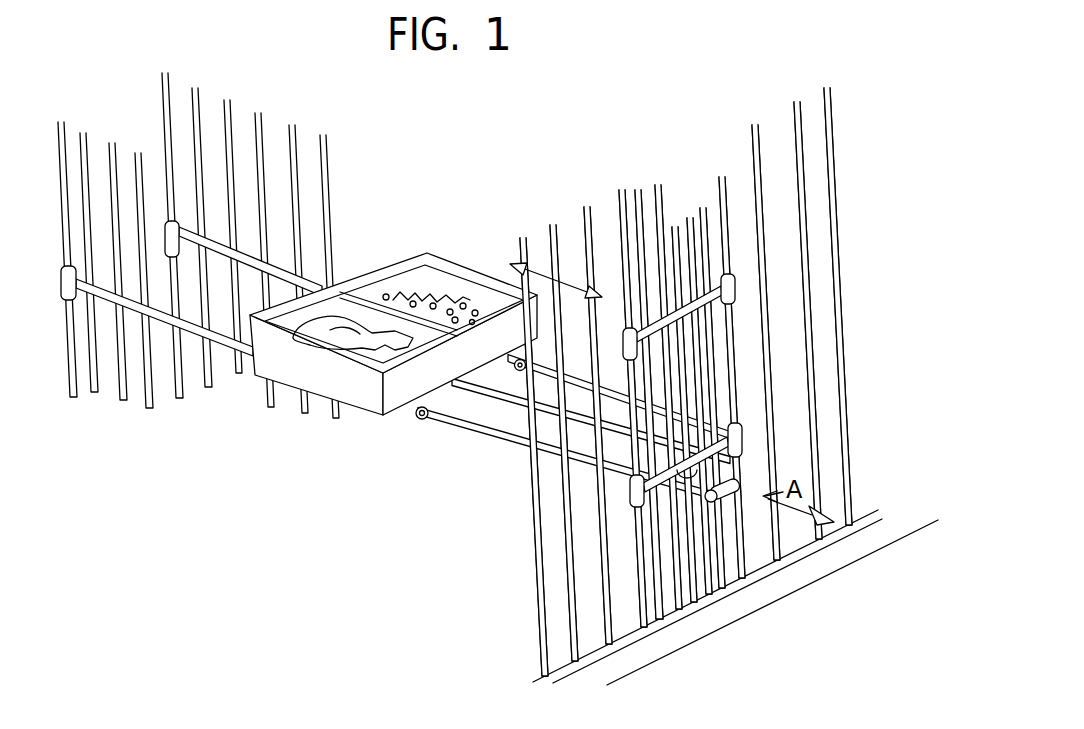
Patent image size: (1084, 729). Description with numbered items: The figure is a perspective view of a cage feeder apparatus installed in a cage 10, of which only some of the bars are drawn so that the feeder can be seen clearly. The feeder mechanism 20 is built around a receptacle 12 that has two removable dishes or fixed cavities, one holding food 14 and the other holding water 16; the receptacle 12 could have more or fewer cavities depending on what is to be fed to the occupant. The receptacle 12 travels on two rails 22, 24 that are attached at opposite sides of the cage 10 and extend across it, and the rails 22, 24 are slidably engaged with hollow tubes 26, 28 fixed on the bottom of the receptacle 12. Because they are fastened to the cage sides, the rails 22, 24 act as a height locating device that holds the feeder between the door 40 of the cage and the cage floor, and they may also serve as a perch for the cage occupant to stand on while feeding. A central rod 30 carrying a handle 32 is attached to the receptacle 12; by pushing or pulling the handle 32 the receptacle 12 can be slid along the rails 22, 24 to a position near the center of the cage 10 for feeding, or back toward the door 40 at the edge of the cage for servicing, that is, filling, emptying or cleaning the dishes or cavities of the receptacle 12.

The cage 10 is at (693, 652).
The receptacle 12 is at (377, 402).
The food 14 is at (362, 343).
The water 16 is at (463, 300).
The feeder mechanism 20 is at (568, 440).
The rail 22 is at (507, 452).
The rail 24 is at (317, 285).
The hollow tube 26 is at (447, 408).
The hollow tube 28 is at (513, 357).
The central rod 30 is at (462, 380).
The handle 32 is at (742, 487).
The door 40 is at (706, 360).